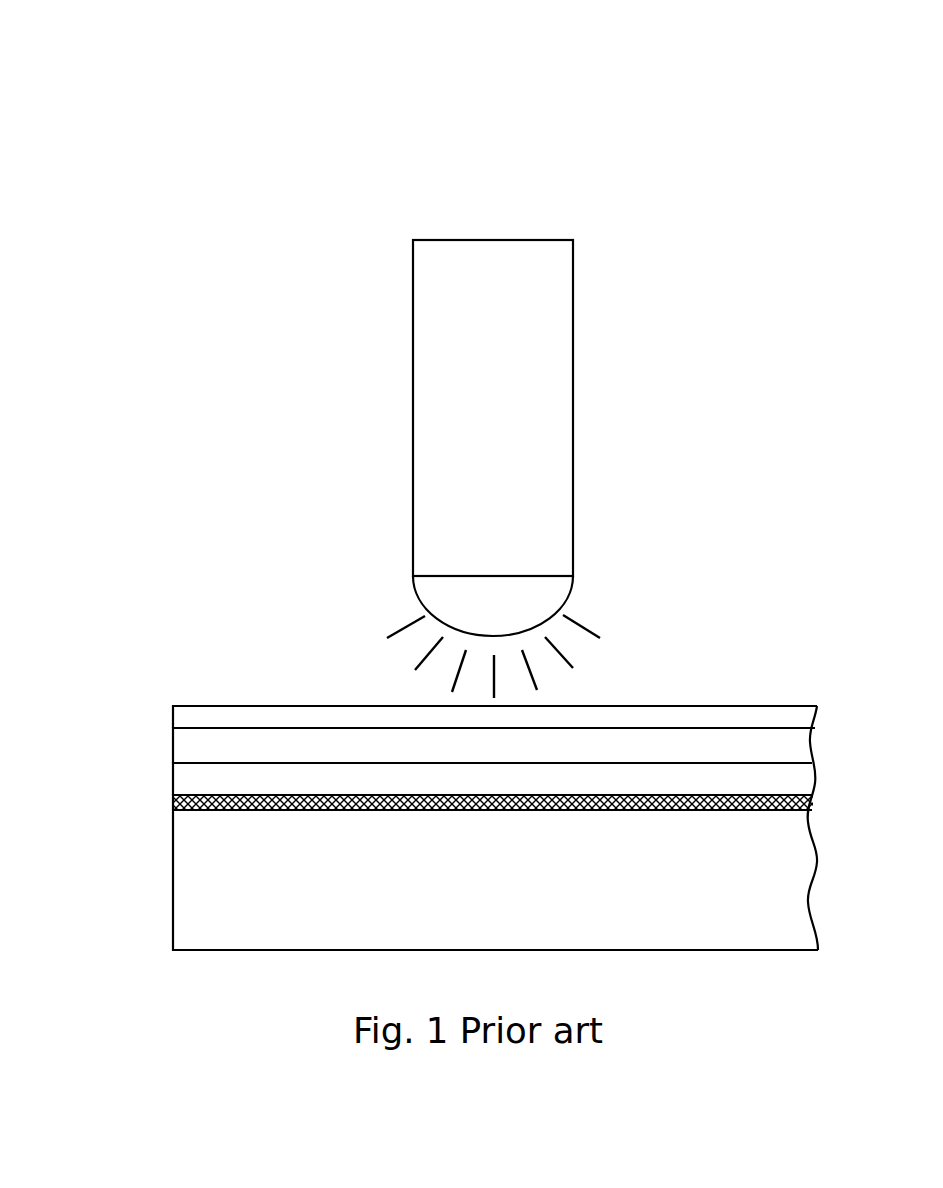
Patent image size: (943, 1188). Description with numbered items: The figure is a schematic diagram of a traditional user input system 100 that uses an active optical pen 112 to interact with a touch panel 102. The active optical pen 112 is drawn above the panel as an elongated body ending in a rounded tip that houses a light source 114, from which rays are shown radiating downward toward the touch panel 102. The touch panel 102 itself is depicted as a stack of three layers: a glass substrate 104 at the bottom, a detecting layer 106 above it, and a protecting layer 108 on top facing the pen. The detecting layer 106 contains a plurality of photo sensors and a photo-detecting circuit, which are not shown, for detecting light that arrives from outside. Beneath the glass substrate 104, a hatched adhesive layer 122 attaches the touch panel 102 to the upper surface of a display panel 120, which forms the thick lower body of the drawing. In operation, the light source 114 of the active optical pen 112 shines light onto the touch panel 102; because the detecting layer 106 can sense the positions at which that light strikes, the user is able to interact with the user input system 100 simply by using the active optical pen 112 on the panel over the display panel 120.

The user input system 100 is at (681, 66).
The active optical pen 112 is at (416, 218).
The light source 114 is at (440, 594).
The touch panel 102 is at (110, 677).
The protecting layer 108 is at (185, 712).
The detecting layer 106 is at (185, 745).
The glass substrate 104 is at (185, 780).
The adhesive layer 122 is at (173, 803).
The display panel 120 is at (498, 899).